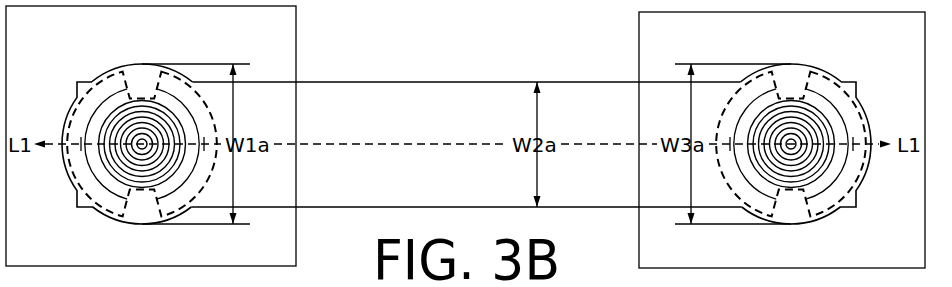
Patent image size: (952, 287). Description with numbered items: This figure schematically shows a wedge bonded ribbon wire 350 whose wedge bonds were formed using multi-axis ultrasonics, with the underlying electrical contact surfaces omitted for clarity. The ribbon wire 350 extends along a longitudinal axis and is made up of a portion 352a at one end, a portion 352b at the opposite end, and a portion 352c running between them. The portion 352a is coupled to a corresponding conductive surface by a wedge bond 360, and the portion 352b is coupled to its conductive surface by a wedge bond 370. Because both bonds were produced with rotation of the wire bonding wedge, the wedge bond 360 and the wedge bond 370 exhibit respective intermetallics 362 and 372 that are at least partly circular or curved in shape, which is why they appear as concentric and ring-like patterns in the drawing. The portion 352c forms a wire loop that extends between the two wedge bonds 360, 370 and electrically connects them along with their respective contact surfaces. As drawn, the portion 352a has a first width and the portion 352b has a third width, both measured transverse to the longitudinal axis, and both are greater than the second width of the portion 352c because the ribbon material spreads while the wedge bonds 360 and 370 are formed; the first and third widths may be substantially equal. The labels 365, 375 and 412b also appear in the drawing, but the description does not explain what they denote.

The ribbon wire 350 is at (464, 141).
The portion 352a is at (125, 141).
The portion 352b is at (806, 143).
The portion 352c is at (470, 81).
The wedge bond 360 is at (143, 214).
The intermetallic 362 is at (97, 117).
The first region 365 is at (279, 262).
The wedge bond 370 is at (795, 216).
The intermetallic 372 is at (835, 180).
The second region 375 is at (687, 262).
The component 412b is at (672, 282).